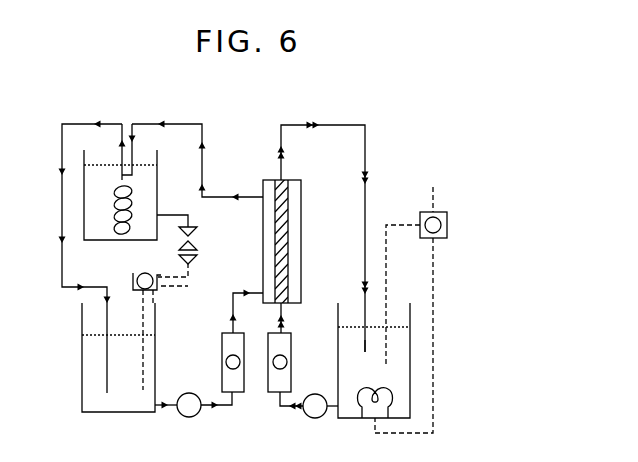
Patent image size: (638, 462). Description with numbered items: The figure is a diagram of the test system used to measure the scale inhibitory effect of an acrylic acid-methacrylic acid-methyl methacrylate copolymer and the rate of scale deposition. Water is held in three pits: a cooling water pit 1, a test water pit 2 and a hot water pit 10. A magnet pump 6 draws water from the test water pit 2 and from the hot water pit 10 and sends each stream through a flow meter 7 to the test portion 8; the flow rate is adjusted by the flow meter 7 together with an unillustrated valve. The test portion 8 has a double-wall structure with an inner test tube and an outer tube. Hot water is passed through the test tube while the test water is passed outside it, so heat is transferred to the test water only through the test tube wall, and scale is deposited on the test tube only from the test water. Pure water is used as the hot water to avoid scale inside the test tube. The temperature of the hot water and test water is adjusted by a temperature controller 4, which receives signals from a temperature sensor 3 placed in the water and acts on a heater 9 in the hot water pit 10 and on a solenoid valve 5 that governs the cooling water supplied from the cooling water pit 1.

The cooling water pit 1 is at (120, 191).
The test water pit 2 is at (118, 357).
The temperature sensor 3 is at (246, 366).
The temperature controller 4 is at (302, 300).
The solenoid valve 5 is at (184, 238).
The magnet pump 6 is at (252, 394).
The flow meter 7 is at (256, 362).
The test portion 8 is at (291, 243).
The heater 9 is at (375, 393).
The hot water pit 10 is at (376, 328).